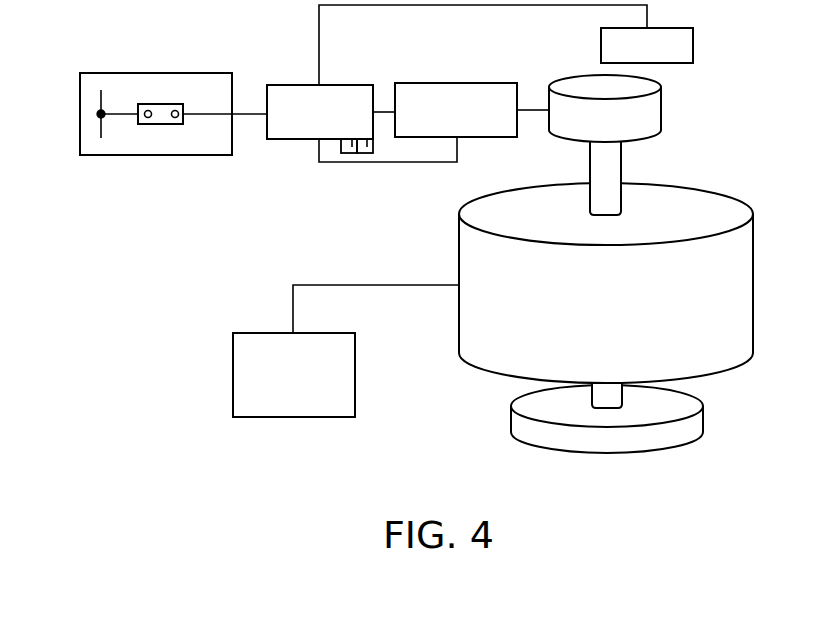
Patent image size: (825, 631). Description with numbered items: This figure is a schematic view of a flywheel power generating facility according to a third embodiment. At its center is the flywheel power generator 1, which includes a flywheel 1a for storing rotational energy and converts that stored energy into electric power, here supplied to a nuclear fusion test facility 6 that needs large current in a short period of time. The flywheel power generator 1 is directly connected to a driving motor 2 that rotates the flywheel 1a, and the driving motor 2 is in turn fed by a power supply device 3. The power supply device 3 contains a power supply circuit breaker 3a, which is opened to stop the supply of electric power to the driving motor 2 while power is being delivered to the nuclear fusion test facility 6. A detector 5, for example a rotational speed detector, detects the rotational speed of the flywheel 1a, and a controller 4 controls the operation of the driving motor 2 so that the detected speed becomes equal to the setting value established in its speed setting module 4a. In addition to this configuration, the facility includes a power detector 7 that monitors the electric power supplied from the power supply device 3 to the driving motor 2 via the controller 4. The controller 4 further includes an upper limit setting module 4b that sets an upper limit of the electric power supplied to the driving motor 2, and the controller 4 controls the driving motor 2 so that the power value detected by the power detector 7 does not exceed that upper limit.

The flywheel power generator 1 is at (631, 295).
The flywheel 1a is at (690, 208).
The driving motor 2 is at (661, 108).
The power supply device 3 is at (173, 128).
The power supply circuit breaker 3a is at (162, 103).
The controller 4 is at (457, 105).
The speed setting module 4a is at (349, 153).
The upper limit setting module 4b is at (366, 153).
The detector 5 is at (693, 46).
The nuclear fusion test facility 6 is at (294, 417).
The power detector 7 is at (457, 83).